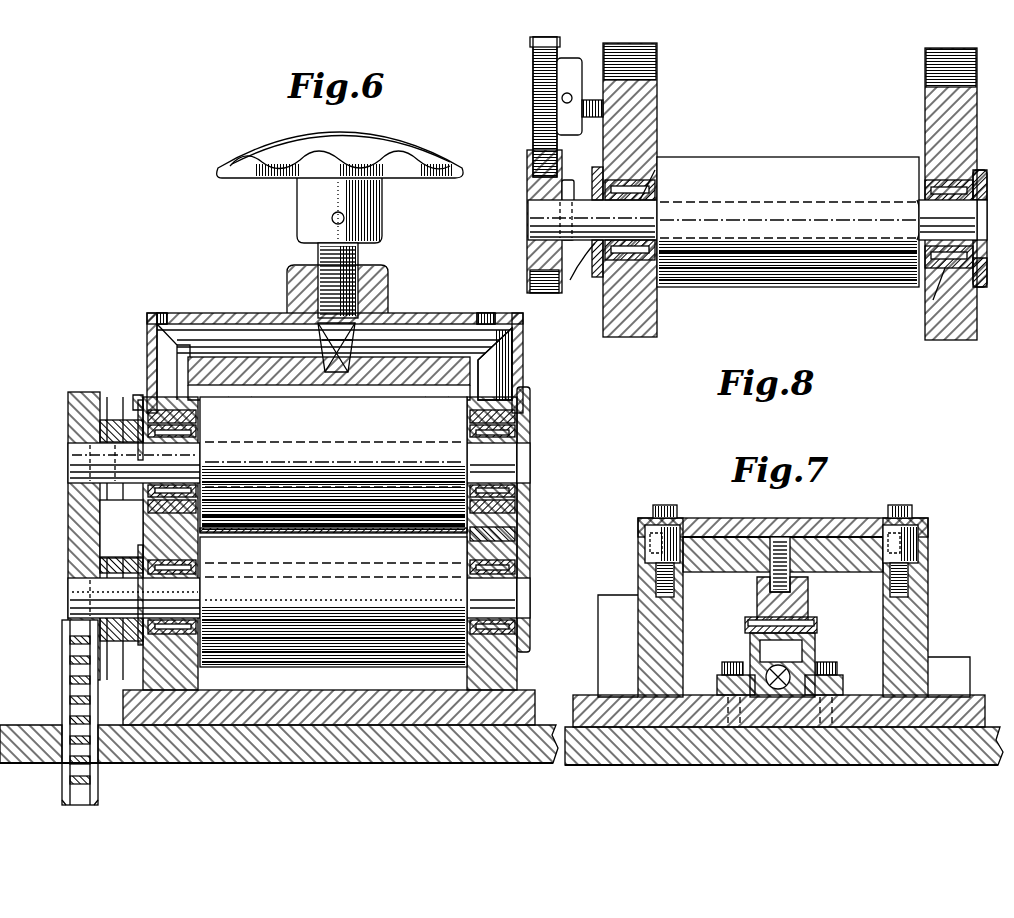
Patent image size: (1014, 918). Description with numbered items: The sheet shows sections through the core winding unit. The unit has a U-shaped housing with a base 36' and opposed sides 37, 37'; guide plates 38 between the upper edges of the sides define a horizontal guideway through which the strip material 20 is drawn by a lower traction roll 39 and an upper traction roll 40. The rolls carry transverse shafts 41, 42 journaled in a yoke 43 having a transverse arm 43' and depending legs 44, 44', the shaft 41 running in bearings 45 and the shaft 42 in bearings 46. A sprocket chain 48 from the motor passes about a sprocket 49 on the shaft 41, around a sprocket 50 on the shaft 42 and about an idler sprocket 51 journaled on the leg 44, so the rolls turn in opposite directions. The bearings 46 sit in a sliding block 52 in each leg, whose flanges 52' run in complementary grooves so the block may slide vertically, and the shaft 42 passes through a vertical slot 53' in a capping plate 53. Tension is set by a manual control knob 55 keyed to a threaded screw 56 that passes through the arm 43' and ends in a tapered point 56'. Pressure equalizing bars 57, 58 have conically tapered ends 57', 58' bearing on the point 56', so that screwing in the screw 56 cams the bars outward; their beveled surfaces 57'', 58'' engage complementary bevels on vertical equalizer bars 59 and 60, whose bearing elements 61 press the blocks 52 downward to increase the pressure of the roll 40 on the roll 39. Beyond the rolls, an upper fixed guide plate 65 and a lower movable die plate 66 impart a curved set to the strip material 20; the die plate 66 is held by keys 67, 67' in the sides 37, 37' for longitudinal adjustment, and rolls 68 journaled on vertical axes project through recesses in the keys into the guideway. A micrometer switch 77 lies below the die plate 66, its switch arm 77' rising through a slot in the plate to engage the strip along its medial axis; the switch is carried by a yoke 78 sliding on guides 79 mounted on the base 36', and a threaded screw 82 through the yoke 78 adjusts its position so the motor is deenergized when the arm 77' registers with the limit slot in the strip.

In FIG. 6, the strip material 20 is at (326, 532).
In FIG. 7, the strip material 20 is at (735, 518).
In FIG. 6, the base 36' is at (281, 718).
In FIG. 7, the base 36' is at (784, 707).
In FIG. 7, the side 37 is at (634, 607).
In FIG. 7, the side 37' is at (926, 607).
In FIG. 6, the guide plates 38 is at (402, 562).
In FIG. 6, the traction roll 39 is at (297, 650).
In FIG. 6, the traction roll 40 is at (394, 408).
In FIG. 8, the traction roll 40 is at (792, 165).
In FIG. 6, the shaft 41 is at (85, 594).
In FIG. 6, the shaft 42 is at (85, 450).
In FIG. 8, the shaft 42 is at (548, 216).
In FIG. 6, the yoke 43 is at (335, 291).
In FIG. 6, the transverse arm 43' is at (189, 347).
In FIG. 6, the depending leg 44 is at (153, 543).
In FIG. 8, the depending leg 44 is at (652, 190).
In FIG. 6, the depending leg 44' is at (513, 543).
In FIG. 8, the depending leg 44' is at (933, 194).
In FIG. 6, the bearings 45 is at (165, 630).
In FIG. 6, the bearings 46 is at (195, 435).
In FIG. 8, the bearings 46 is at (652, 190).
In FIG. 6, the sprocket chain 48 is at (64, 688).
In FIG. 6, the sprocket 49 is at (70, 565).
In FIG. 6, the sprocket 50 is at (80, 430).
In FIG. 8, the sprocket 50 is at (540, 252).
In FIG. 8, the idler sprocket 51 is at (545, 78).
In FIG. 6, the sliding block 52 is at (331, 474).
In FIG. 8, the sliding block 52 is at (792, 227).
In FIG. 8, the flanges 52' is at (787, 232).
In FIG. 6, the capping plate 53 is at (336, 510).
In FIG. 8, the capping plate 53 is at (787, 236).
In FIG. 6, the vertical slot 53' is at (106, 384).
In FIG. 6, the manual control knob 55 is at (398, 140).
In FIG. 6, the threaded screw 56 is at (350, 248).
In FIG. 6, the tapered point 56' is at (320, 347).
In FIG. 6, the pressure equalizing bar 57 is at (260, 379).
In FIG. 6, the conically tapered end 57' is at (329, 381).
In FIG. 6, the beveled surface 57'' is at (144, 343).
In FIG. 6, the pressure equalizing bar 58 is at (334, 345).
In FIG. 6, the conically tapered end 58' is at (358, 381).
In FIG. 6, the beveled surface 58'' is at (517, 362).
In FIG. 6, the equalizer bar 59 is at (165, 352).
In FIG. 6, the equalizer bar 60 is at (505, 366).
In FIG. 6, the bearing elements 61 is at (244, 400).
In FIG. 7, the upper fixed guide plate 65 is at (802, 518).
In FIG. 7, the lower movable die plate 66 is at (726, 572).
In FIG. 7, the key 67 is at (700, 589).
In FIG. 7, the key 67' is at (857, 589).
In FIG. 7, the rolls 68 is at (646, 548).
In FIG. 7, the micrometer switch 77 is at (782, 601).
In FIG. 7, the switch arm 77' is at (804, 569).
In FIG. 7, the yoke 78 is at (802, 652).
In FIG. 7, the guides 79 is at (722, 668).
In FIG. 7, the threaded screw 82 is at (788, 664).